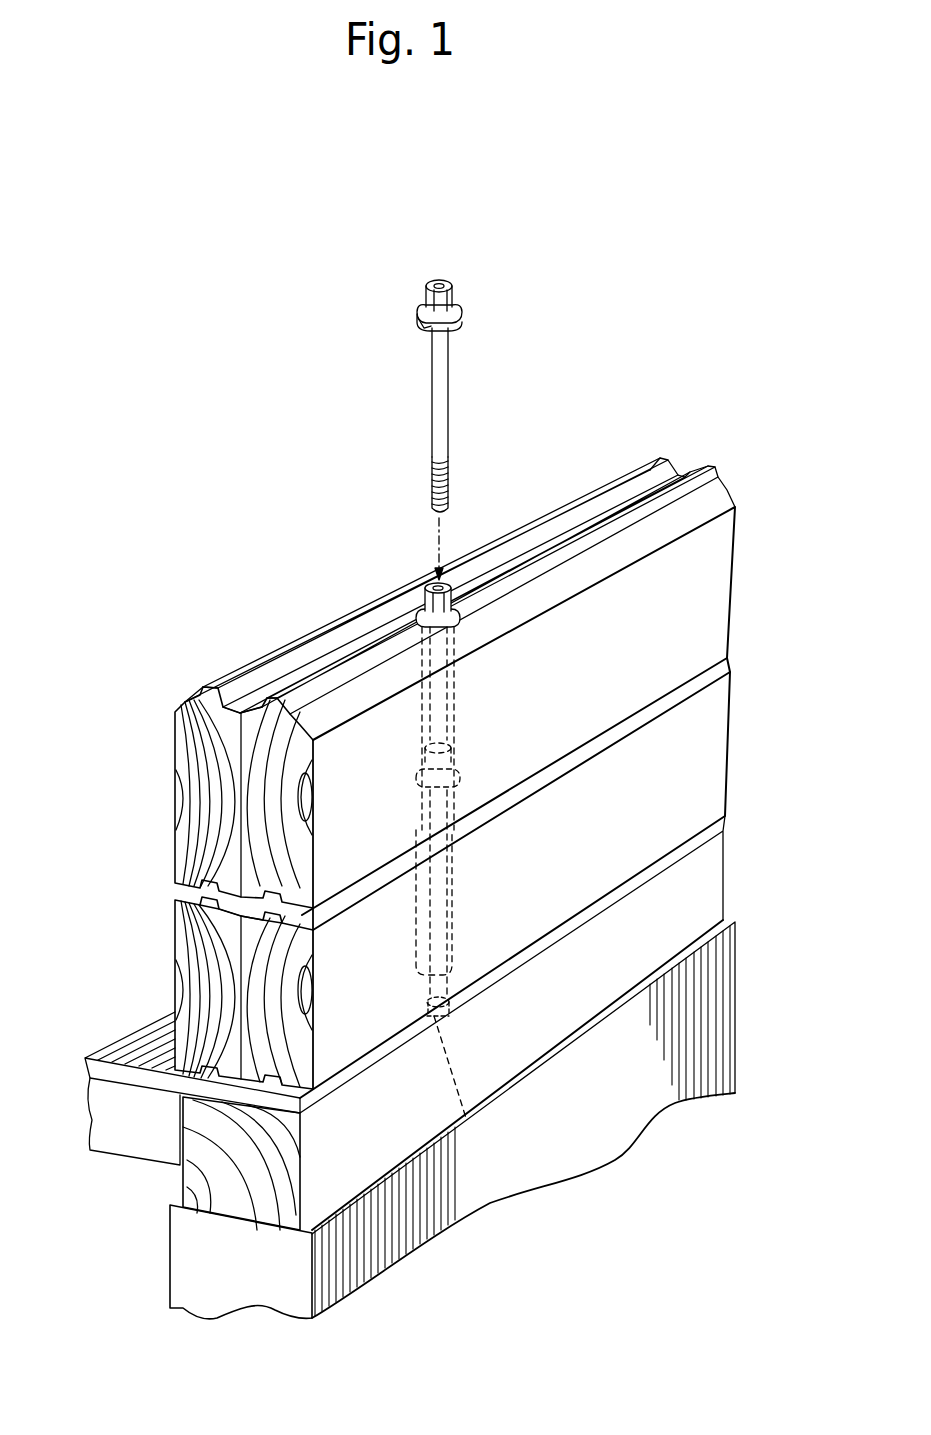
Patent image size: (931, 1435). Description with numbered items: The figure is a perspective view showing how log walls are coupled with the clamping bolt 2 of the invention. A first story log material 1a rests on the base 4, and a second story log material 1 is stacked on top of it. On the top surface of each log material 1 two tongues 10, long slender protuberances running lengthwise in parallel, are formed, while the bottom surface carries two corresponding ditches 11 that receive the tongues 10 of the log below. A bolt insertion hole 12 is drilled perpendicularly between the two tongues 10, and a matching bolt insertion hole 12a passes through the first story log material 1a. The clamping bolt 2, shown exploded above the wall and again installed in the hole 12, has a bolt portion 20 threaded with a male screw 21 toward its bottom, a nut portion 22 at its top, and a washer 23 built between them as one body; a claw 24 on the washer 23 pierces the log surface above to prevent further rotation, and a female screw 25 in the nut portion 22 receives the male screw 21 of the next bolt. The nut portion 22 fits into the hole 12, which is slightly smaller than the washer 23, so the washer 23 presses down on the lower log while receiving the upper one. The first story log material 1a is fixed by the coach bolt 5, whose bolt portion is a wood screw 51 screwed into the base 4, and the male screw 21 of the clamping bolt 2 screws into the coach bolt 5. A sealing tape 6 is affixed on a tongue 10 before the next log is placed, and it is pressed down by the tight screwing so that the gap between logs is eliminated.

The log material 1 is at (712, 587).
The first story log material 1a is at (712, 753).
The clamping bolt 2 is at (434, 605).
The base 4 is at (708, 887).
The coach bolt 5 is at (450, 865).
The sealing tape 6 is at (320, 673).
The tongue 10 is at (260, 728).
The ditch 11 is at (270, 903).
The bolt insertion hole 12 is at (455, 678).
The bolt insertion hole 12a is at (447, 938).
The bolt portion 20 is at (440, 398).
The male screw 21 is at (448, 479).
The nut portion 22 is at (434, 420).
The washer 23 is at (462, 313).
The claw 24 is at (422, 327).
The female screw 25 is at (439, 281).
The wood screw 51 is at (466, 1118).